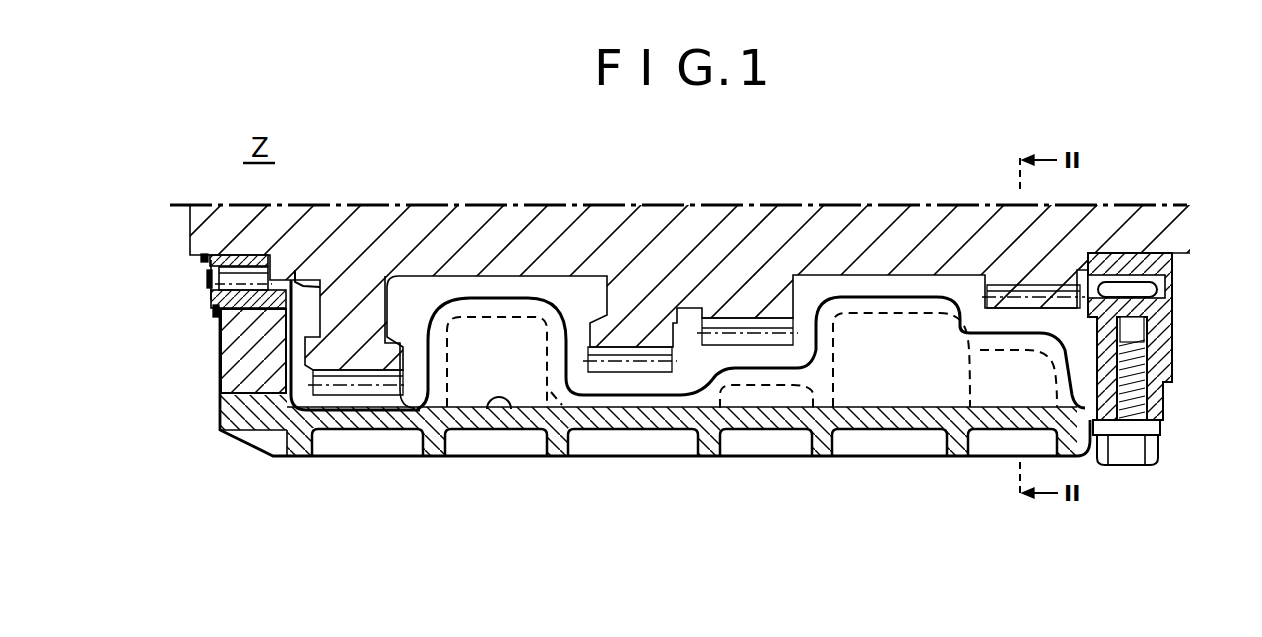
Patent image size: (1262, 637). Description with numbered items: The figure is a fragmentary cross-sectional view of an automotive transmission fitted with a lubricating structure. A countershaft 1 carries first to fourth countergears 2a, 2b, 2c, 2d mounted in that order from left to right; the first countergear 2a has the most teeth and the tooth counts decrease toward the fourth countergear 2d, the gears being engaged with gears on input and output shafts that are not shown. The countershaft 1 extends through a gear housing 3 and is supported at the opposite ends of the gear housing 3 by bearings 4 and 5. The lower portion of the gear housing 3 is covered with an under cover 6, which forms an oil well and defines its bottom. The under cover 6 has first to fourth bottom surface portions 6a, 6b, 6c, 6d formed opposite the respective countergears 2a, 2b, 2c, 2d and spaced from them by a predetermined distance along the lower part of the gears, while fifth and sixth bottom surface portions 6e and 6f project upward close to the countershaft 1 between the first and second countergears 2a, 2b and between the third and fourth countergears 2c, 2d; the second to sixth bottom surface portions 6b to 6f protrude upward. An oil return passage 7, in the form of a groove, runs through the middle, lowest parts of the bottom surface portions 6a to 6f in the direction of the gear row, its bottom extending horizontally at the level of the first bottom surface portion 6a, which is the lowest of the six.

The countershaft 1 is at (555, 204).
The first countergear 2a is at (357, 400).
The second countergear 2b is at (604, 372).
The third countergear 2c is at (738, 350).
The fourth countergear 2d is at (1023, 317).
The gear housing 3 is at (232, 352).
The bearing 4 is at (199, 292).
The bearing 5 is at (1180, 307).
The under cover 6 is at (625, 334).
The first bottom surface portion 6a is at (412, 390).
The second bottom surface portion 6b is at (673, 390).
The third bottom surface portion 6c is at (783, 362).
The fourth bottom surface portion 6d is at (983, 330).
The fifth bottom surface portion 6e is at (507, 297).
The sixth bottom surface portion 6f is at (857, 293).
The oil return passage 7 is at (493, 412).